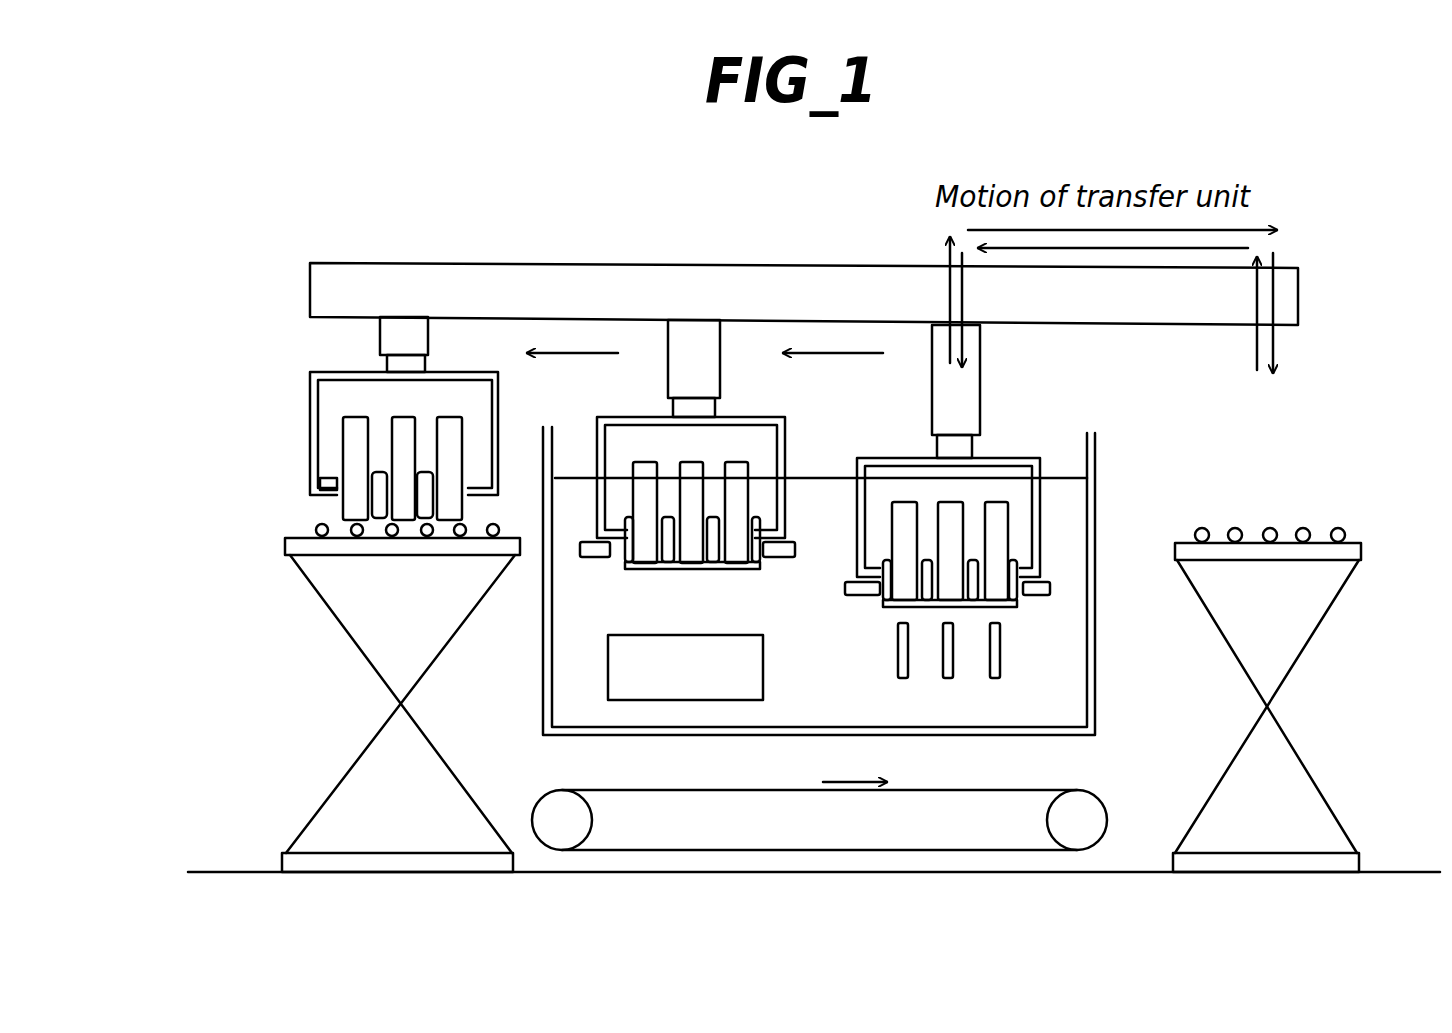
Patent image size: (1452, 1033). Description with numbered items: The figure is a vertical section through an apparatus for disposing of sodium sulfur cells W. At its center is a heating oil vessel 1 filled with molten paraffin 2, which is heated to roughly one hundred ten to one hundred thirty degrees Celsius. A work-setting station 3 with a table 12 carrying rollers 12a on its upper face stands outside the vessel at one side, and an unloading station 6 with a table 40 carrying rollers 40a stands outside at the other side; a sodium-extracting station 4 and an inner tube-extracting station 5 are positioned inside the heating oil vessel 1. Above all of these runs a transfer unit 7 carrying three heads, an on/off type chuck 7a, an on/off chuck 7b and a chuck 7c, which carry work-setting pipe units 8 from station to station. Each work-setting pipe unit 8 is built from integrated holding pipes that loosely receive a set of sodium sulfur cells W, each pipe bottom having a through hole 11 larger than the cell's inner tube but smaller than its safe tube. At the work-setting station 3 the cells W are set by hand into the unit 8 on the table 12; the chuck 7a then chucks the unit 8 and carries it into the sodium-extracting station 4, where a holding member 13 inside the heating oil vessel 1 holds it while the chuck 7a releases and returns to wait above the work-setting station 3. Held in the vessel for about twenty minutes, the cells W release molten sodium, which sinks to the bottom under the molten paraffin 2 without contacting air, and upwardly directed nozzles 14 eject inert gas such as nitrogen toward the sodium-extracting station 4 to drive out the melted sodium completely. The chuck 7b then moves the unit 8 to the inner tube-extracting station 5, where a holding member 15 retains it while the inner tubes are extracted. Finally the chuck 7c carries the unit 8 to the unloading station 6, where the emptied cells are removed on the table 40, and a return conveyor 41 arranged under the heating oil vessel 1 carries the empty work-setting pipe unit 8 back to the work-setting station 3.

The heating oil vessel 1 is at (1096, 513).
The molten paraffin 2 is at (785, 700).
The work-setting station 3 is at (1301, 633).
The sodium-extracting station 4 is at (994, 464).
The inner tube-extracting station 5 is at (728, 458).
The unloading station 6 is at (382, 445).
The transfer unit 7 is at (710, 280).
The on/off type chuck 7a is at (1041, 459).
The on/off chuck 7b is at (786, 461).
The chuck 7c is at (306, 443).
The work-setting pipe unit 8 is at (325, 491).
The through hole 11 is at (690, 568).
The table 12 is at (1364, 552).
The rollers 12a is at (1339, 528).
The holding member 13 is at (1052, 590).
The nozzles 14 is at (1001, 665).
The holding member 15 is at (775, 560).
The table 40 is at (346, 698).
The rollers 40a is at (308, 528).
The return conveyor 41 is at (1049, 790).
The sodium sulfur cell W is at (452, 424).